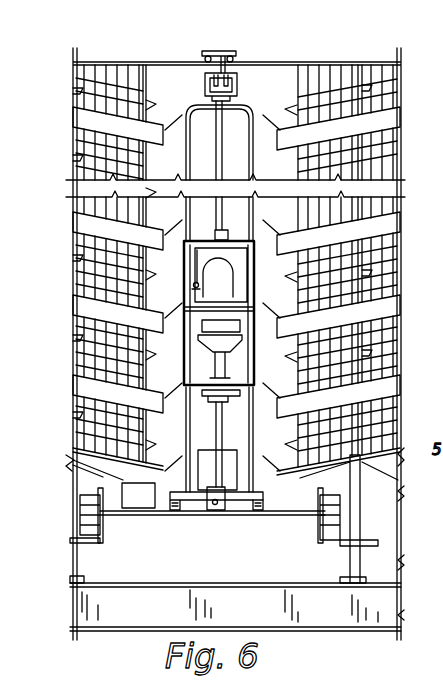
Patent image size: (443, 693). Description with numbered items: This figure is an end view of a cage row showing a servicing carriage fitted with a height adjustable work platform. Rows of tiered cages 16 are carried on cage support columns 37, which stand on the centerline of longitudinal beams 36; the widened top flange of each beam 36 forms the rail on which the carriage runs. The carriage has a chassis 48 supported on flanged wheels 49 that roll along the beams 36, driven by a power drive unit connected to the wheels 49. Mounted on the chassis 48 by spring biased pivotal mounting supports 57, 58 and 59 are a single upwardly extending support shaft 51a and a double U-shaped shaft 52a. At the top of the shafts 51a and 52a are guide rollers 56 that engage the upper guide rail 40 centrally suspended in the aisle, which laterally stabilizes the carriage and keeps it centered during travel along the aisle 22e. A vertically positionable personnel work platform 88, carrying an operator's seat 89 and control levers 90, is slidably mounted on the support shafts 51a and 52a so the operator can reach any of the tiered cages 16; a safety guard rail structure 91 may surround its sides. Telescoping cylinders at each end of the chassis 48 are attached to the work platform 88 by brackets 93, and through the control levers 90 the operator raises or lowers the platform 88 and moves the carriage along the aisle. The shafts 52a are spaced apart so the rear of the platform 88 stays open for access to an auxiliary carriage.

The tiered cages 16 is at (125, 83).
The upper guide rail 40 is at (236, 68).
The guide rollers 56 is at (205, 80).
The double U-shaped shaft 52a is at (250, 118).
The support shaft 51a is at (218, 135).
The control levers 90 is at (200, 297).
The operator's seat 89 is at (228, 292).
The safety guard rail structure 91 is at (185, 276).
The work platform 88 is at (235, 376).
The spring biased pivotal mounting support 57 is at (222, 512).
The spring biased pivotal mounting support 58 is at (258, 492).
The spring biased pivotal mounting support 59 is at (262, 507).
The chassis 48 is at (144, 513).
The flanged wheels 49 is at (102, 525).
The brackets 93 is at (72, 460).
The cage support columns 37 is at (358, 500).
The longitudinal beams 36 is at (76, 572).
The aisle 22e is at (206, 535).